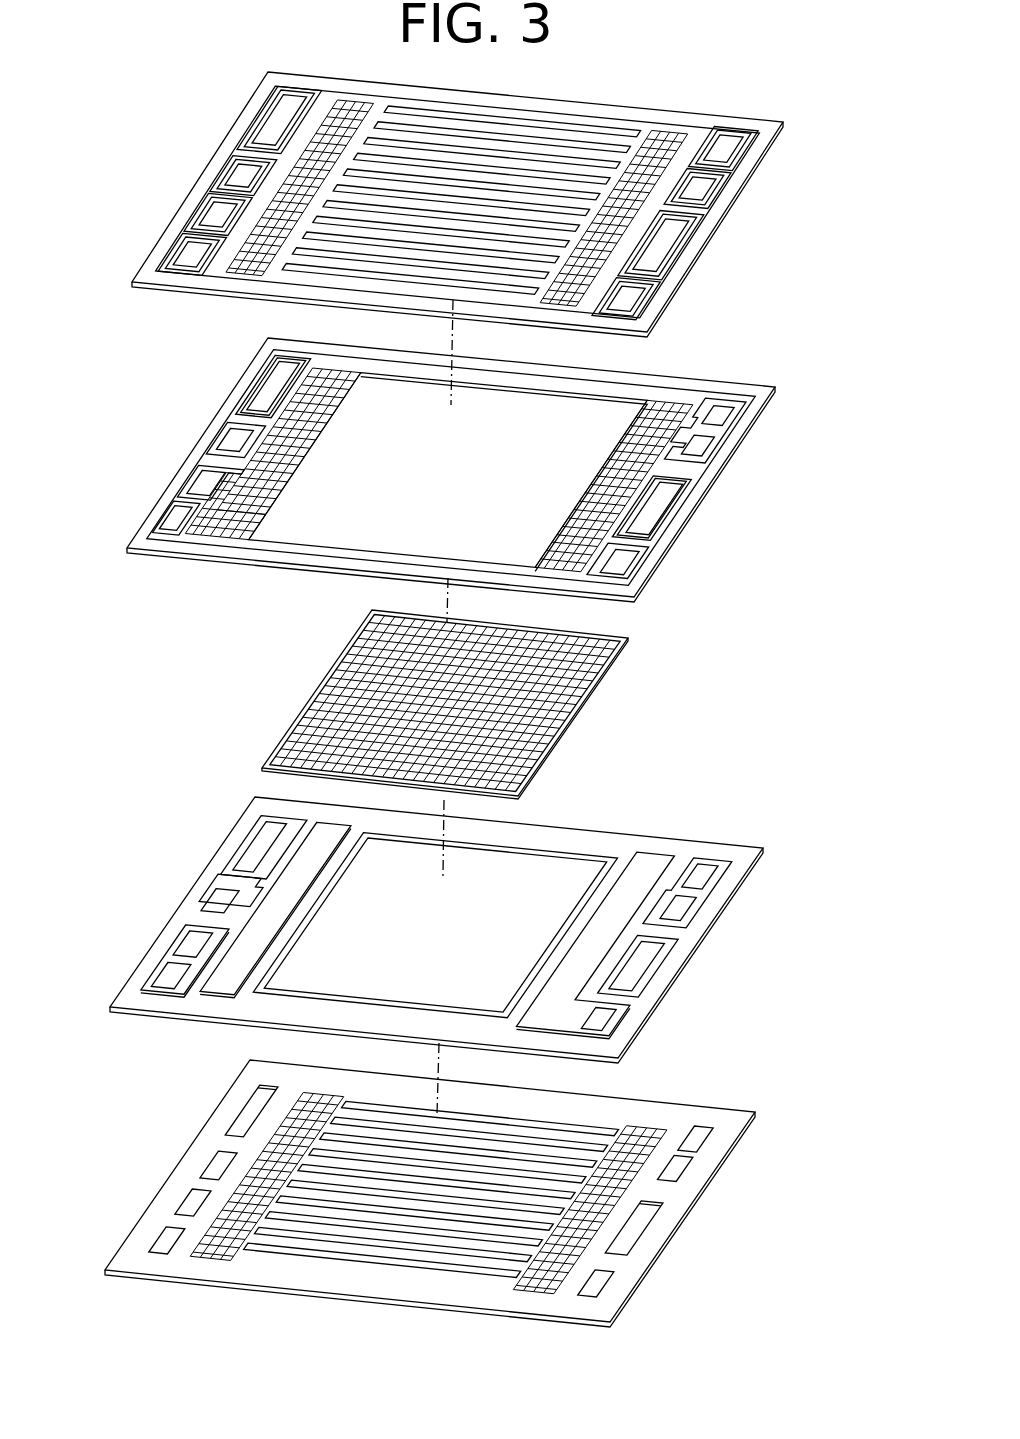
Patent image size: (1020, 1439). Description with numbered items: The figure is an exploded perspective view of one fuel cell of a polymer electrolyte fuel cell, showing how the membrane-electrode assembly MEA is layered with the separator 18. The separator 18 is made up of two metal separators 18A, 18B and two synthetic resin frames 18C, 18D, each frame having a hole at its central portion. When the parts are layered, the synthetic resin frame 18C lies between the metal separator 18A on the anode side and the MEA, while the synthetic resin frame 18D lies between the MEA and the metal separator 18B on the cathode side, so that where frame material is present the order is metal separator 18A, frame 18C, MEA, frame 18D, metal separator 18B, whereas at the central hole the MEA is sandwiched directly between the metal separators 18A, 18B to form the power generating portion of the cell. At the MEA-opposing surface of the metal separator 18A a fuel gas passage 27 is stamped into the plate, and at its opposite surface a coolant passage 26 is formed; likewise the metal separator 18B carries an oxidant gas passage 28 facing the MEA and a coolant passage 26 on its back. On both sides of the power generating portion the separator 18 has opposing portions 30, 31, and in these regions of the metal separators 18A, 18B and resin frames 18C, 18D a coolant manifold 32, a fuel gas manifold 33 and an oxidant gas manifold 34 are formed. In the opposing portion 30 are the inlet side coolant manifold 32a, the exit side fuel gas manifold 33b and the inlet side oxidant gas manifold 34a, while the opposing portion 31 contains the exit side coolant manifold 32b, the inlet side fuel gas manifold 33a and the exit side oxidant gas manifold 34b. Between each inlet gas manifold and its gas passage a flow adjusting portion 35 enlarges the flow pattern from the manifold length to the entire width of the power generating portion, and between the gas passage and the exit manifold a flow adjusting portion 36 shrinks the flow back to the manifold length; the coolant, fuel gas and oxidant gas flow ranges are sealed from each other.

The separator 18 is at (204, 176).
The metal separator 18A is at (652, 1263).
The metal separator 18B is at (740, 191).
The synthetic resin frame 18C is at (673, 983).
The synthetic resin frame 18D is at (713, 480).
The coolant passage 26 is at (408, 216).
The fuel gas passage 27 is at (300, 1198).
The oxidant gas passage 28 is at (474, 234).
The opposing portion 30 is at (655, 396).
The opposing portion 31 is at (330, 372).
The coolant manifold 32 is at (660, 506).
The inlet side coolant manifold 32a is at (664, 242).
The exit side coolant manifold 32b is at (276, 112).
The fuel gas manifold 33 is at (233, 442).
The inlet side fuel gas manifold 33a is at (222, 440).
The exit side fuel gas manifold 33b is at (637, 560).
The oxidant gas manifold 34 is at (200, 520).
The inlet side oxidant gas manifold 34a is at (716, 420).
The exit side oxidant gas manifold 34b is at (207, 485).
The flow adjusting portion 35 is at (566, 575).
The flow adjusting portion 36 is at (224, 530).
The membrane-electrode assembly MEA is at (600, 722).